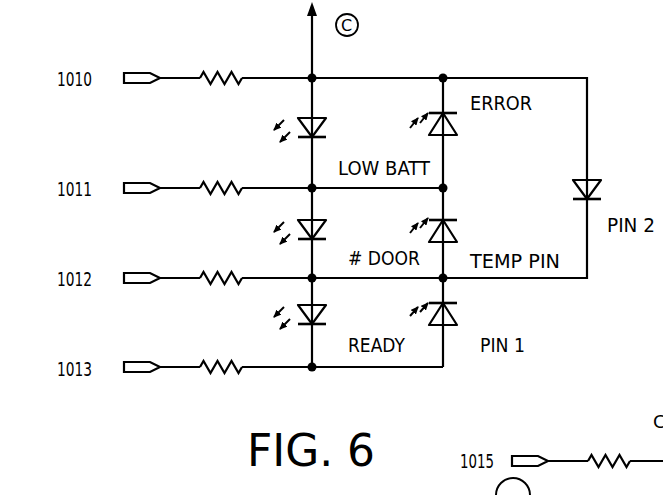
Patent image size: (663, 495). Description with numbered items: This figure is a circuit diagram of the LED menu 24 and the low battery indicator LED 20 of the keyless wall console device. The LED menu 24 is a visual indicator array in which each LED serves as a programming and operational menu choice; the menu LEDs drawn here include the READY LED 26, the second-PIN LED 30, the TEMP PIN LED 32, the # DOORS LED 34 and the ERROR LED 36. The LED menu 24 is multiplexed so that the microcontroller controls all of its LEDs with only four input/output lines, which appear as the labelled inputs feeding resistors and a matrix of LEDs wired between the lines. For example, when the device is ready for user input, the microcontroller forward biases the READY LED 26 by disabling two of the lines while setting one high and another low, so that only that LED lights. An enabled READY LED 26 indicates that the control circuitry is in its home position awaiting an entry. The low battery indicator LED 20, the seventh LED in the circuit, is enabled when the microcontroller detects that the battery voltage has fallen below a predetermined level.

The low battery indicator LED 20 is at (302, 105).
The LED menu 24 is at (540, 60).
The READY LED 26 is at (305, 296).
The PIN 2 LED 30 is at (608, 164).
The TEMP PIN LED 32 is at (460, 208).
The # DOORS LED 34 is at (303, 211).
The ERROR LED 36 is at (456, 150).